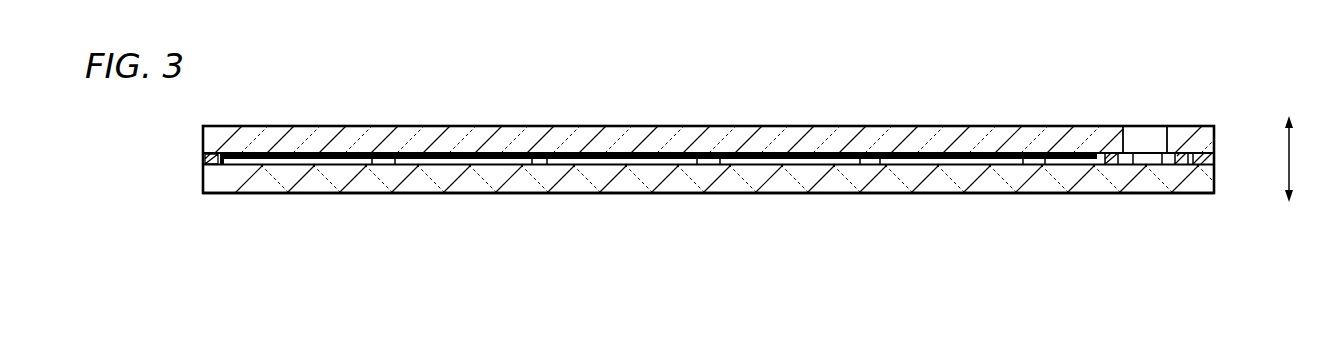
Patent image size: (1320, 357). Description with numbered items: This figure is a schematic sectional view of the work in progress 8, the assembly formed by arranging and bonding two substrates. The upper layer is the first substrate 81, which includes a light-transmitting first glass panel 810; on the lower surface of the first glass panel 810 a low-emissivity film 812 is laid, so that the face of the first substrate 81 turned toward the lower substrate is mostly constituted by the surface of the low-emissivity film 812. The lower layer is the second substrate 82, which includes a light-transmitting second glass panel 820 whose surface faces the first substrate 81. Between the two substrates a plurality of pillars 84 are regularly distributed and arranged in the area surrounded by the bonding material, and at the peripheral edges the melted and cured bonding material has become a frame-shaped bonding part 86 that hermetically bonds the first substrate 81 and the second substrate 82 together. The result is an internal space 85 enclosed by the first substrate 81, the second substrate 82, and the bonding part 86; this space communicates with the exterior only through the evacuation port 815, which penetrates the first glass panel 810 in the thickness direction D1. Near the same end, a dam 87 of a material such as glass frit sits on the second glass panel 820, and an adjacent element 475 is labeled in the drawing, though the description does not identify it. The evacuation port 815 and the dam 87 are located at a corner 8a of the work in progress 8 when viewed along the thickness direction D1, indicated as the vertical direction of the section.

The work in progress 8 is at (732, 160).
The corner 8a is at (1129, 195).
The first substrate 81 is at (252, 137).
The first glass panel 810 is at (744, 135).
The low-emissivity film 812 is at (648, 158).
The second substrate 82 is at (276, 185).
The second glass panel 820 is at (743, 182).
The pillars 84 is at (382, 166).
The internal space 85 is at (927, 160).
The bonding part 86 is at (1205, 158).
The dam 87 is at (1181, 163).
The evacuation port 815 is at (1132, 128).
The filling port 475 is at (1158, 155).
The thickness direction D1 is at (1302, 159).